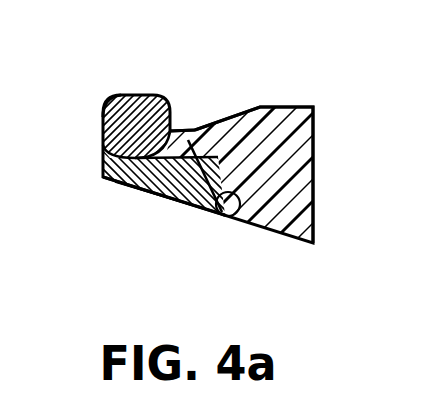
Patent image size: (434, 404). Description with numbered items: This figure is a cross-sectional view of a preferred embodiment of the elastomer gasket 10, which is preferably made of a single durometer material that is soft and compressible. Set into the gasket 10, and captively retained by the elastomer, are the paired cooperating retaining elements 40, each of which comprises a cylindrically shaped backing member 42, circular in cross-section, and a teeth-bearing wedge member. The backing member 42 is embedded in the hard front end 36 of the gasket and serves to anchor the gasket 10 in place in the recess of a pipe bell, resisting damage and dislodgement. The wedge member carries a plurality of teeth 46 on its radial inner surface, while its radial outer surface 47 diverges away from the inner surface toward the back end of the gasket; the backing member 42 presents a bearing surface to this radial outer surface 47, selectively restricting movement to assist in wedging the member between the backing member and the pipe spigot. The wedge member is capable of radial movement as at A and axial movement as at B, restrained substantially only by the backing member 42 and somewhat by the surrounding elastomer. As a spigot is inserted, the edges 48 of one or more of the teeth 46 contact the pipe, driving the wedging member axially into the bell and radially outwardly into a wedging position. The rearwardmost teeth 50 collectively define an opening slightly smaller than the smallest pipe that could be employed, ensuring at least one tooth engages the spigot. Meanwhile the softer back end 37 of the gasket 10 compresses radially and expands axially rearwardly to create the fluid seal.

The elastomer gasket 10 is at (70, 245).
The hard front end 36 is at (125, 97).
The softer back end 37 is at (288, 113).
The paired cooperating retaining elements 40 is at (92, 143).
The backing member 42 is at (107, 107).
The teeth 46 is at (117, 186).
The radial outer surface 47 is at (195, 128).
The edges of the teeth 48 is at (137, 200).
The rearwardmost teeth 50 is at (232, 222).
The radial movement A is at (357, 220).
The axial movement B is at (205, 262).